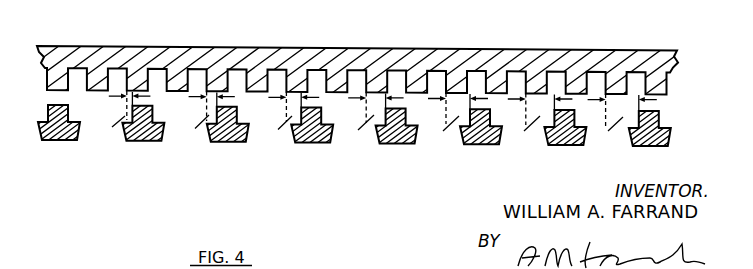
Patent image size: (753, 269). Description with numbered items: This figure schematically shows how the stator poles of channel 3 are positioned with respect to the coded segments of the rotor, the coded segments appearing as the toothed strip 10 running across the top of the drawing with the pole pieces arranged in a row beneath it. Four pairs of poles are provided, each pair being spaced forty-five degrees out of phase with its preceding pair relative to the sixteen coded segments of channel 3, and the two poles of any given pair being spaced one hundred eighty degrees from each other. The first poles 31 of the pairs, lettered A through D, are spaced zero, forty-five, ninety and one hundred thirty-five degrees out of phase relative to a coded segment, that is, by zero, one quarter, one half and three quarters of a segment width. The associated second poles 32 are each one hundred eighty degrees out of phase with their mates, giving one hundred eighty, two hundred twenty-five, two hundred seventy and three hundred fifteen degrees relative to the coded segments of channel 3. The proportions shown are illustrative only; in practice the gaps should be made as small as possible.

The channel 3 is at (714, 58).
The toothed rack bar 10 is at (523, 46).
The first pole of each pole pair 31 is at (316, 141).
The second pole of each pole pair 32 is at (653, 144).